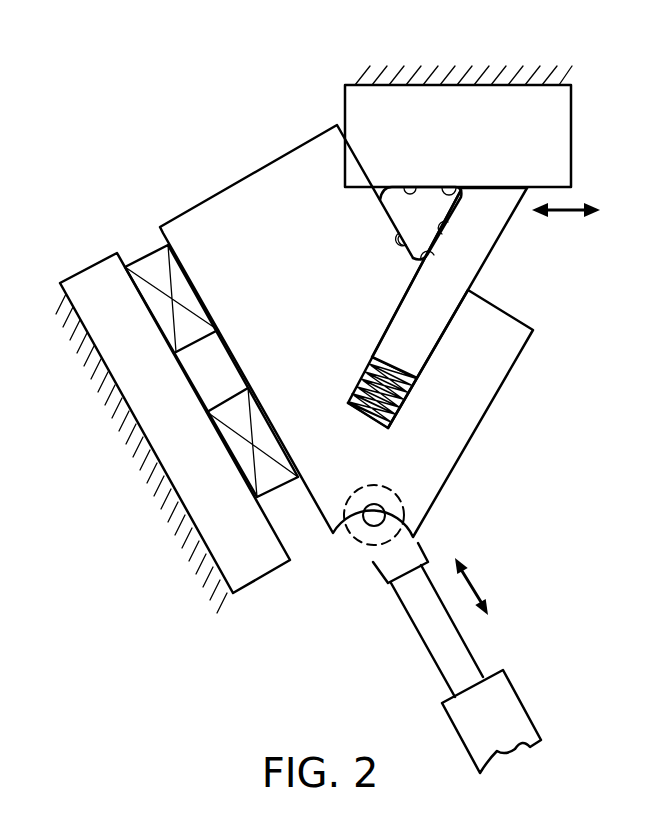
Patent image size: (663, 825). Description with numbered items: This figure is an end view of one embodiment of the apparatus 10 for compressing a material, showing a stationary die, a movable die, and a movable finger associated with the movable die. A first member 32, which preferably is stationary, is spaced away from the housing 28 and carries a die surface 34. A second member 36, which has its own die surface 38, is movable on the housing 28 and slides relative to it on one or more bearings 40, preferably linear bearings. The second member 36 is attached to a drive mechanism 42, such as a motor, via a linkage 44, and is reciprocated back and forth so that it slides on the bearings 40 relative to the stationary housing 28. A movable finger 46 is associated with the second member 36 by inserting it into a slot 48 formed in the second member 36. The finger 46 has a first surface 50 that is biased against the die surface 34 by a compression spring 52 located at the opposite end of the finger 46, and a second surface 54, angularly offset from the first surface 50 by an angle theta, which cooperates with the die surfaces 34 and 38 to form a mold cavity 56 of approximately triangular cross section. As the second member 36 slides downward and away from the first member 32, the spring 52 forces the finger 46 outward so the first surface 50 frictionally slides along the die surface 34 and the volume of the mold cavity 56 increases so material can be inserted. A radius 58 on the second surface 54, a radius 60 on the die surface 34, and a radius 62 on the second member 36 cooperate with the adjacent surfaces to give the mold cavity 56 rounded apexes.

The apparatus 10 is at (218, 75).
The housing 28 is at (88, 277).
The first member 32 is at (476, 123).
The die surface 34 is at (407, 187).
The second member 36 is at (345, 293).
The die surface 38 is at (404, 252).
The bearings 40 is at (140, 259).
The drive mechanism 42 is at (515, 706).
The linkage 44 is at (464, 655).
The movable finger 46 is at (432, 330).
The slot 48 is at (402, 404).
The first surface 50 is at (487, 186).
The compression spring 52 is at (370, 373).
The second surface 54 is at (446, 222).
The mold cavity 56 is at (413, 219).
The radius 58 is at (441, 187).
The radius 60 is at (383, 203).
The radius 62 is at (437, 259).